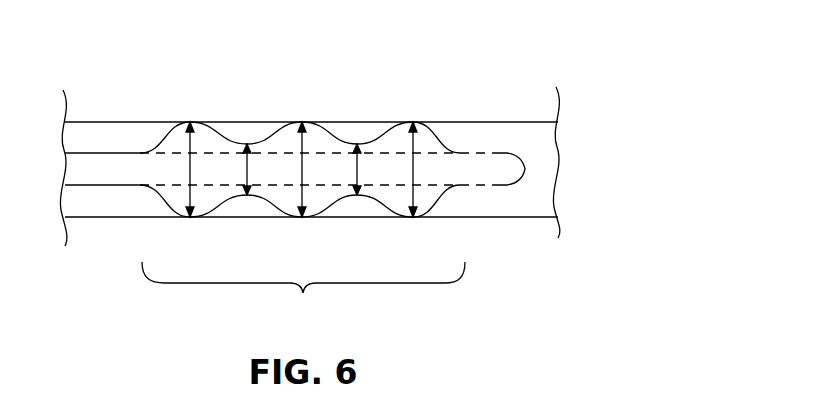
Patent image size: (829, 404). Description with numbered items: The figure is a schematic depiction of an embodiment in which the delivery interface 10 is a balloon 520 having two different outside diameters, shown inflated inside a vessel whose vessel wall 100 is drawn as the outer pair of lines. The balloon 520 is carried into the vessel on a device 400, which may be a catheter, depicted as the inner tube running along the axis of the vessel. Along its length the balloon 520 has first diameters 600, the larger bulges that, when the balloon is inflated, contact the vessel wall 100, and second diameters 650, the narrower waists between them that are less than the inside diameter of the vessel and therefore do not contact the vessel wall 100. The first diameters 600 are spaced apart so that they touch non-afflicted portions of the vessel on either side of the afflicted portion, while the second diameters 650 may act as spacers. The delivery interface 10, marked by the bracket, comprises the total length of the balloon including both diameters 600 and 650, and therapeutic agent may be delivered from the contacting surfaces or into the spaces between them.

The delivery interface 10 is at (303, 292).
The vessel wall 100 is at (137, 121).
The device 400 is at (125, 185).
The balloon 520 is at (222, 124).
The first diameters 600 is at (196, 170).
The second diameters 650 is at (250, 167).